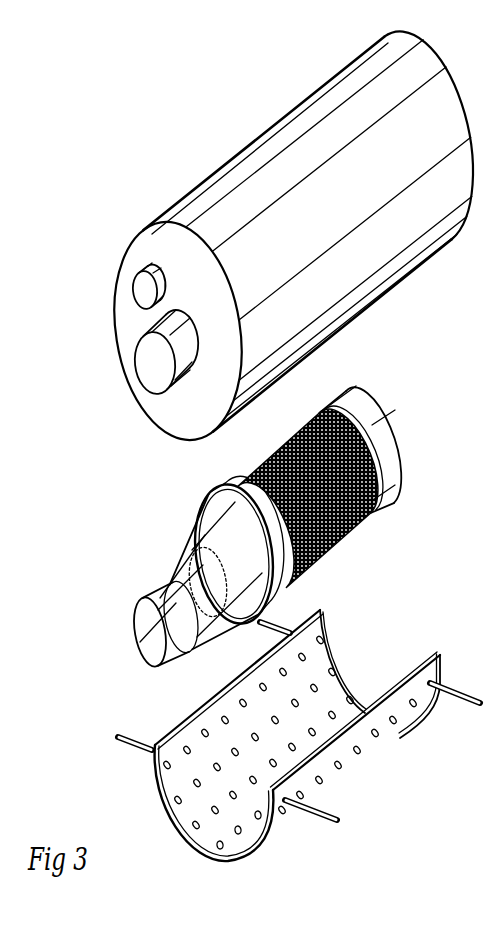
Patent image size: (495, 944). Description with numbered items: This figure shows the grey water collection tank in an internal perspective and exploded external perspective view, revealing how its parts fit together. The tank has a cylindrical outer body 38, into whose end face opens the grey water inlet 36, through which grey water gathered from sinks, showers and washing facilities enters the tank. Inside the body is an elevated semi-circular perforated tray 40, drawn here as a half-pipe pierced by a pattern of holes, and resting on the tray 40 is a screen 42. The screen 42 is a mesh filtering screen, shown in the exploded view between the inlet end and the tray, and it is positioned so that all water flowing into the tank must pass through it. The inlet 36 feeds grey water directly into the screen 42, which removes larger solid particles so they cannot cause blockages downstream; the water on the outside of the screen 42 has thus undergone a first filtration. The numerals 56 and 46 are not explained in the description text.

The cylindrical outer body 38 is at (253, 195).
The purge port 56 is at (134, 288).
The grey water inlet 36 is at (150, 363).
The screen 42 is at (397, 432).
The filter mesh 46 is at (340, 545).
The elevated semi-circular perforated tray 40 is at (353, 762).